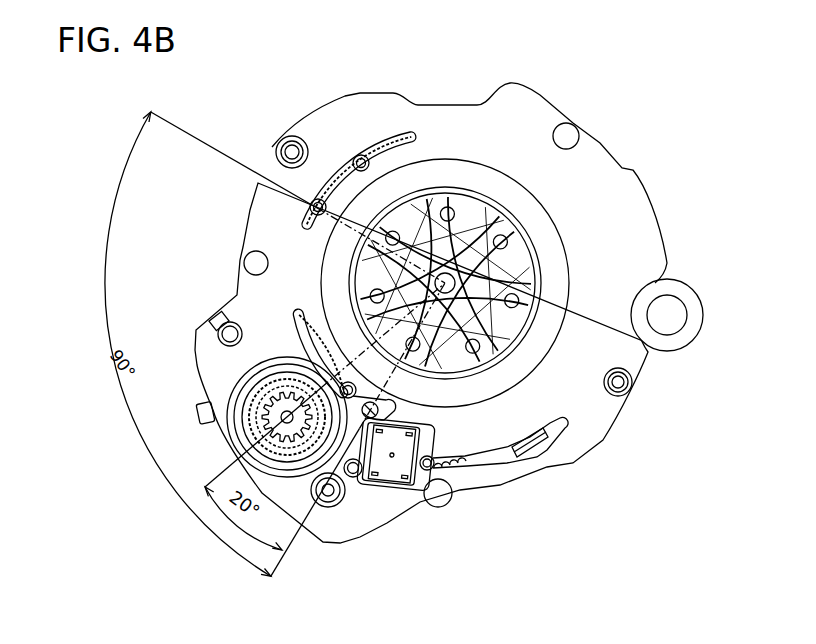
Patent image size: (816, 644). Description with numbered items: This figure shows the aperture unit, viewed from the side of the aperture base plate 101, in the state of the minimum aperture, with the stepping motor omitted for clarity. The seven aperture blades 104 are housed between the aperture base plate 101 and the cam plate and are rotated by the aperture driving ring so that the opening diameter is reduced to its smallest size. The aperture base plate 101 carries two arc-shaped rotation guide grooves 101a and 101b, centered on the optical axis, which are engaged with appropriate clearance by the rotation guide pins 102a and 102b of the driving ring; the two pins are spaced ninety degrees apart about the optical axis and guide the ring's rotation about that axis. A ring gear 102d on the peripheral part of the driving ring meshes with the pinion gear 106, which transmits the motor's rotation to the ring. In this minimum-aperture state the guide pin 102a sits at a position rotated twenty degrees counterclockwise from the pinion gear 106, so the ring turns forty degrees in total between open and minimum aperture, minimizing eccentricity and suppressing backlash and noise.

The aperture base plate 101 is at (607, 142).
The rotation guide groove 101a is at (300, 333).
The rotation guide groove 101b is at (353, 170).
The rotation guide pin 102a is at (371, 415).
The rotation guide pin 102b is at (315, 205).
The ring gear 102d is at (327, 470).
The aperture blades 104 is at (487, 307).
The pinion gear 106 is at (257, 420).